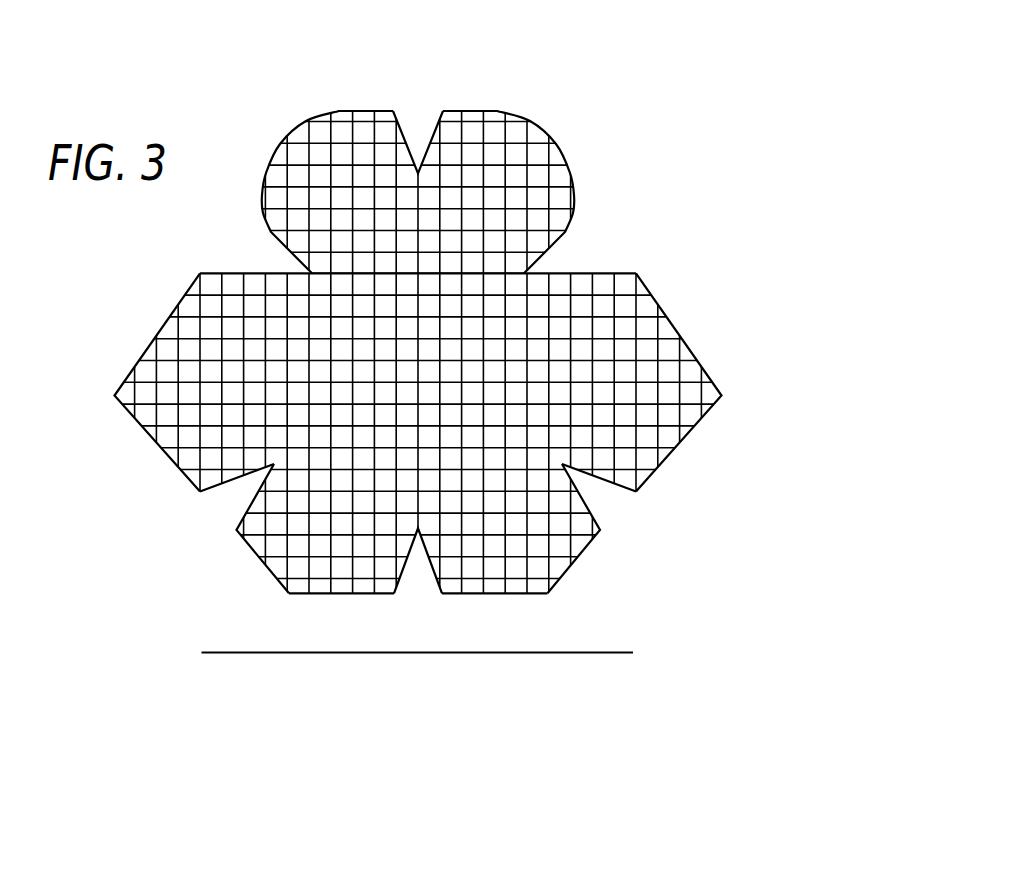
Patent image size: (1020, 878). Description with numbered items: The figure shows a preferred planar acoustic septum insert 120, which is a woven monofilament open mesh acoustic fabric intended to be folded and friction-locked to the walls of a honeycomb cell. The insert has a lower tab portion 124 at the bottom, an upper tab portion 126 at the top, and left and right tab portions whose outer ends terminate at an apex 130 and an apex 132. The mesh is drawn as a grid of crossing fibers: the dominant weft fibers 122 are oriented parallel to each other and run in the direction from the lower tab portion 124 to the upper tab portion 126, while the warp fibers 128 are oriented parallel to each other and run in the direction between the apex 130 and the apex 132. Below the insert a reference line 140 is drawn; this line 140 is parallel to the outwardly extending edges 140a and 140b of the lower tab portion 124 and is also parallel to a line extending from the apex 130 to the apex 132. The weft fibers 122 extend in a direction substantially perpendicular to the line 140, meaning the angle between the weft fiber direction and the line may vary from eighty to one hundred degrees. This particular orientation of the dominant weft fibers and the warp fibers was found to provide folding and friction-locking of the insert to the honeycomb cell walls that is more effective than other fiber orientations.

The planar acoustic septum insert 120 is at (577, 114).
The weft fibers 122 is at (487, 218).
The lower tab portion 124 is at (253, 551).
The upper tab portion 126 is at (490, 111).
The warp fibers 128 is at (210, 380).
The apex of left tab portion 130 is at (112, 395).
The apex of right tab portion 132 is at (722, 397).
The line 140 is at (573, 653).
The outwardly extending edge of lower tab portion 140a is at (343, 593).
The outwardly extending edge of lower tab portion 140b is at (493, 593).